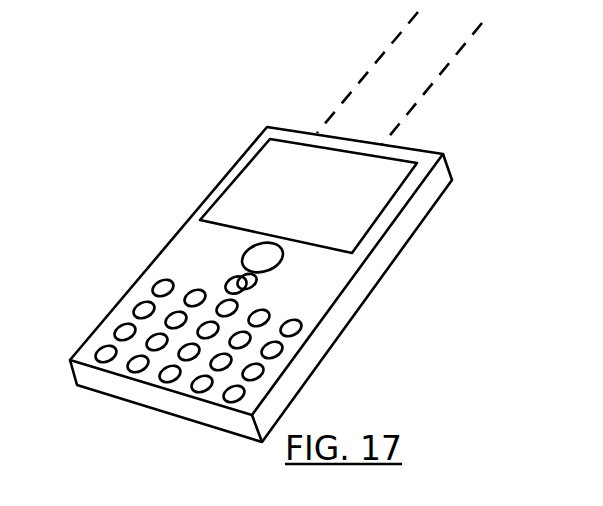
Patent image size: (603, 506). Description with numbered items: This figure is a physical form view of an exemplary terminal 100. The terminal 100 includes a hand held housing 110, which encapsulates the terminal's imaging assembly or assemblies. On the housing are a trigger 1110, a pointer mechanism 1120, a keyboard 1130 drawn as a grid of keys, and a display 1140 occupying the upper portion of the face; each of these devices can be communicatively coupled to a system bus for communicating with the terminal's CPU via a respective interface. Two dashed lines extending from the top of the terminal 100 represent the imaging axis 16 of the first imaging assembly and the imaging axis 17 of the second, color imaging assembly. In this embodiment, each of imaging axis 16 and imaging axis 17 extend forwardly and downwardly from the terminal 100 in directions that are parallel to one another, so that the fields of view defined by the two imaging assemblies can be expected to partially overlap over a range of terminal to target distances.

The terminal 100 is at (308, 284).
The hand held housing 110 is at (329, 321).
The trigger 1110 is at (247, 248).
The pointer mechanism 1120 is at (228, 276).
The keyboard 1130 is at (148, 255).
The display 1140 is at (255, 183).
The imaging axis 16 is at (379, 59).
The imaging axis 17 is at (444, 72).